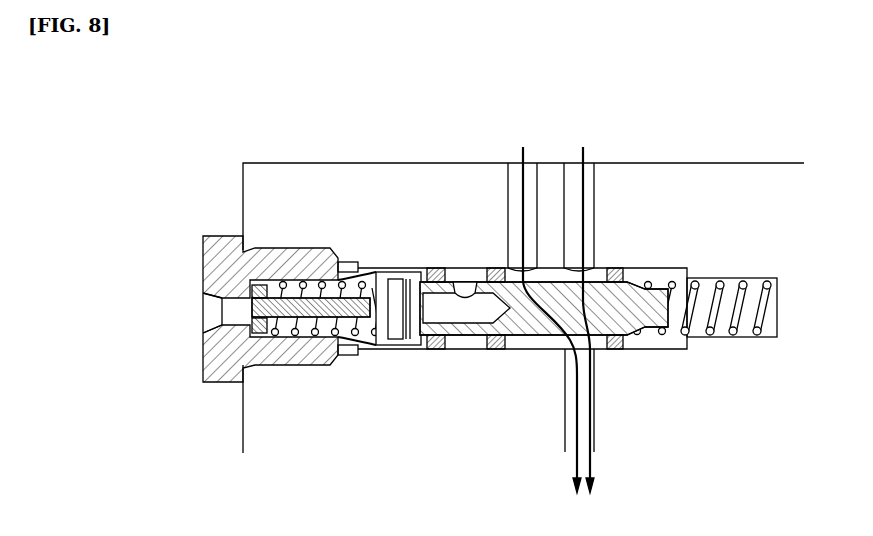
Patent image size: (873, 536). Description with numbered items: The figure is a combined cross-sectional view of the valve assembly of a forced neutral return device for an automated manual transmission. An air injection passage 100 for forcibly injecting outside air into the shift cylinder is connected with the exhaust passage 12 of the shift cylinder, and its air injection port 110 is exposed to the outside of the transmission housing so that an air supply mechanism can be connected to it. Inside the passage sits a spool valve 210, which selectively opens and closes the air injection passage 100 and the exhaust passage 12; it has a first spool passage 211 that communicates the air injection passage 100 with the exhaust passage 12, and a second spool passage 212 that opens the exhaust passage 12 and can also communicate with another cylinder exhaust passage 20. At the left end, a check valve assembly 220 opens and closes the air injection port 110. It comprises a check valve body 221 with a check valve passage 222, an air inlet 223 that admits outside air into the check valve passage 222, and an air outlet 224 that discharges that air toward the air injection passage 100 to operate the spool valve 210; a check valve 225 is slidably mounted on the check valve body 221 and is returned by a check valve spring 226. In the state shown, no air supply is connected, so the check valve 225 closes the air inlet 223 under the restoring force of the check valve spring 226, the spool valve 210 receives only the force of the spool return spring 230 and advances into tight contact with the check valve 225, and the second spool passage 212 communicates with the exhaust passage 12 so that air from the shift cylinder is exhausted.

The exhaust passage 12 is at (530, 192).
The other cylinder exhaust passage 20 is at (590, 193).
The air injection passage 100 is at (514, 344).
The air injection port 110 is at (278, 182).
The spool valve 210 is at (598, 270).
The first spool passage 211 is at (468, 270).
The second spool passage 212 is at (540, 345).
The check valve assembly 220 is at (274, 295).
The check valve body 221 is at (218, 363).
The check valve passage 222 is at (303, 334).
The air inlet 223 is at (213, 315).
The air outlet 224 is at (372, 265).
The check valve 225 is at (285, 333).
The check valve spring 226 is at (320, 334).
The spool return spring 230 is at (735, 312).